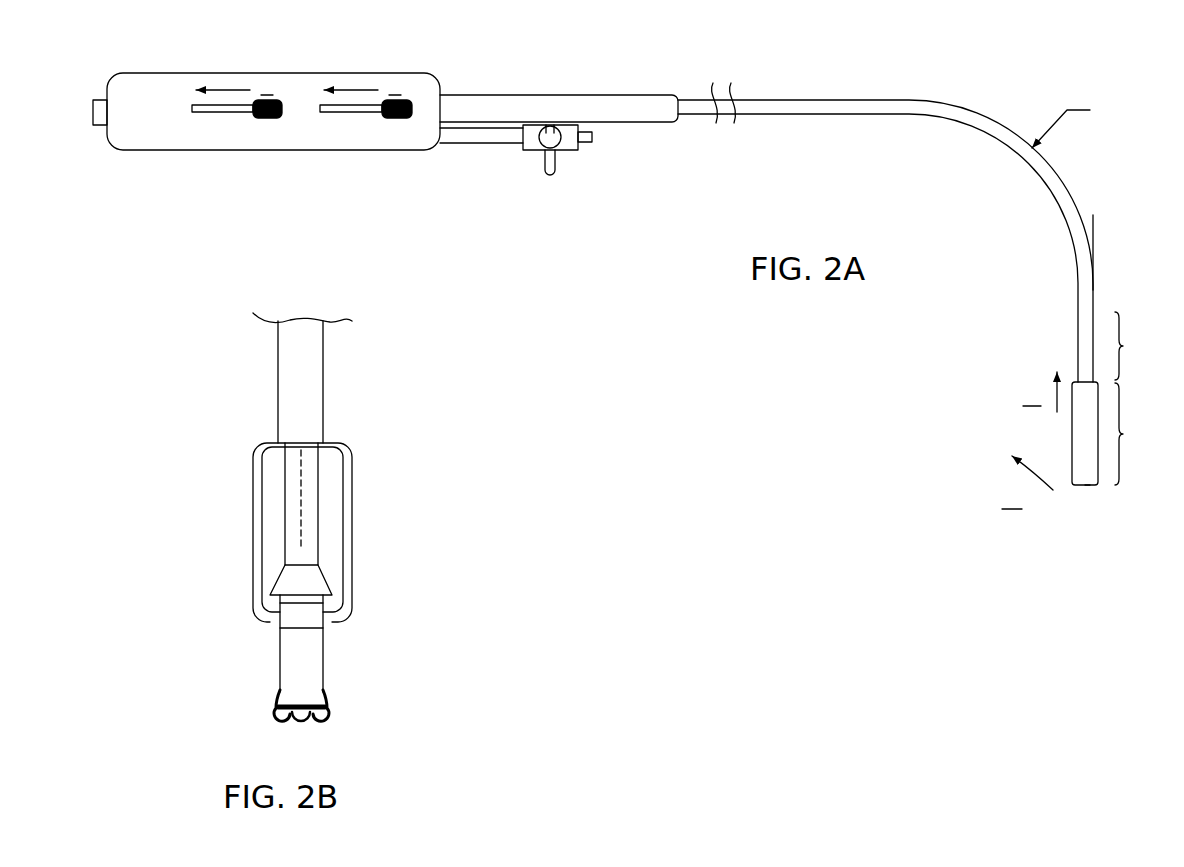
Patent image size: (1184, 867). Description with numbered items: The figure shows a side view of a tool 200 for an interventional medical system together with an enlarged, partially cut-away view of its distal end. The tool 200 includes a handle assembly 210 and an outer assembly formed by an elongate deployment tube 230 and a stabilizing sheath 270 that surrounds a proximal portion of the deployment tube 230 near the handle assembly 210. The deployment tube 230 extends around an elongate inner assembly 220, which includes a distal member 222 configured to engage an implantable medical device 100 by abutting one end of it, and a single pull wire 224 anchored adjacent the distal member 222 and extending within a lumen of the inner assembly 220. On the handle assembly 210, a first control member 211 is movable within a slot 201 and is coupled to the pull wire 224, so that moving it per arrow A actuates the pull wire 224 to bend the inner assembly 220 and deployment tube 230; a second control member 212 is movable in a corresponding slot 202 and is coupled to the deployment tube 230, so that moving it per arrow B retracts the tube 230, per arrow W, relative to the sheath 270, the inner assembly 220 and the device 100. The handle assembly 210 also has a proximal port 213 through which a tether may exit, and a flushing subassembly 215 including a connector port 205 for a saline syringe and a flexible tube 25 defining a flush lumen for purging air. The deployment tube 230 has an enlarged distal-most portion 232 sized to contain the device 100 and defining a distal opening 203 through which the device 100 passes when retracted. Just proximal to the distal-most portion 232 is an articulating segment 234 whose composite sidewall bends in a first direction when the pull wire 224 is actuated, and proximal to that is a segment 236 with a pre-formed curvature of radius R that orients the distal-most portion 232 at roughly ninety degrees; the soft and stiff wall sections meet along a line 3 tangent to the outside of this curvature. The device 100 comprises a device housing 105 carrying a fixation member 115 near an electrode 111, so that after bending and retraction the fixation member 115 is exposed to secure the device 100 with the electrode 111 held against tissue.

In FIG. 2A, the tool 200 is at (437, 228).
In FIG. 2A, the handle assembly 210 is at (310, 216).
In FIG. 2A, the proximal port 213 is at (93, 113).
In FIG. 2A, the slot 201 is at (195, 108).
In FIG. 2A, the first control member 211 is at (267, 119).
In FIG. 2A, the slot 202 is at (325, 108).
In FIG. 2A, the second control member 212 is at (397, 119).
In FIG. 2A, the stabilizing sheath 270 is at (500, 106).
In FIG. 2A, the flexible tube 25 is at (505, 135).
In FIG. 2A, the connector port 205 is at (568, 142).
In FIG. 2A, the flushing subassembly 215 is at (513, 184).
In FIG. 2A, the deployment tube 230 is at (772, 110).
In FIG. 2A, the segment having a pre-formed curvature 236 is at (1037, 173).
In FIG. 2A, the line 3 is at (1095, 248).
In FIG. 2A, the articulating segment 234 is at (1138, 346).
In FIG. 2B, the articulating segment 234 is at (312, 407).
In FIG. 2A, the enlarged distal-most portion 232 is at (1117, 433).
In FIG. 2B, the enlarged distal-most portion 232 is at (352, 533).
In FIG. 2A, the distal opening 203 is at (1088, 486).
In FIG. 2B, the distal opening 203 is at (327, 607).
In FIG. 2B, the inner assembly 220 is at (332, 492).
In FIG. 2B, the pull wire 224 is at (302, 518).
In FIG. 2B, the distal member 222 is at (292, 583).
In FIG. 2B, the implantable medical device 100 is at (255, 667).
In FIG. 2B, the device housing 105 is at (287, 671).
In FIG. 2B, the fixation member 115 is at (331, 713).
In FIG. 2B, the electrode 111 is at (303, 725).